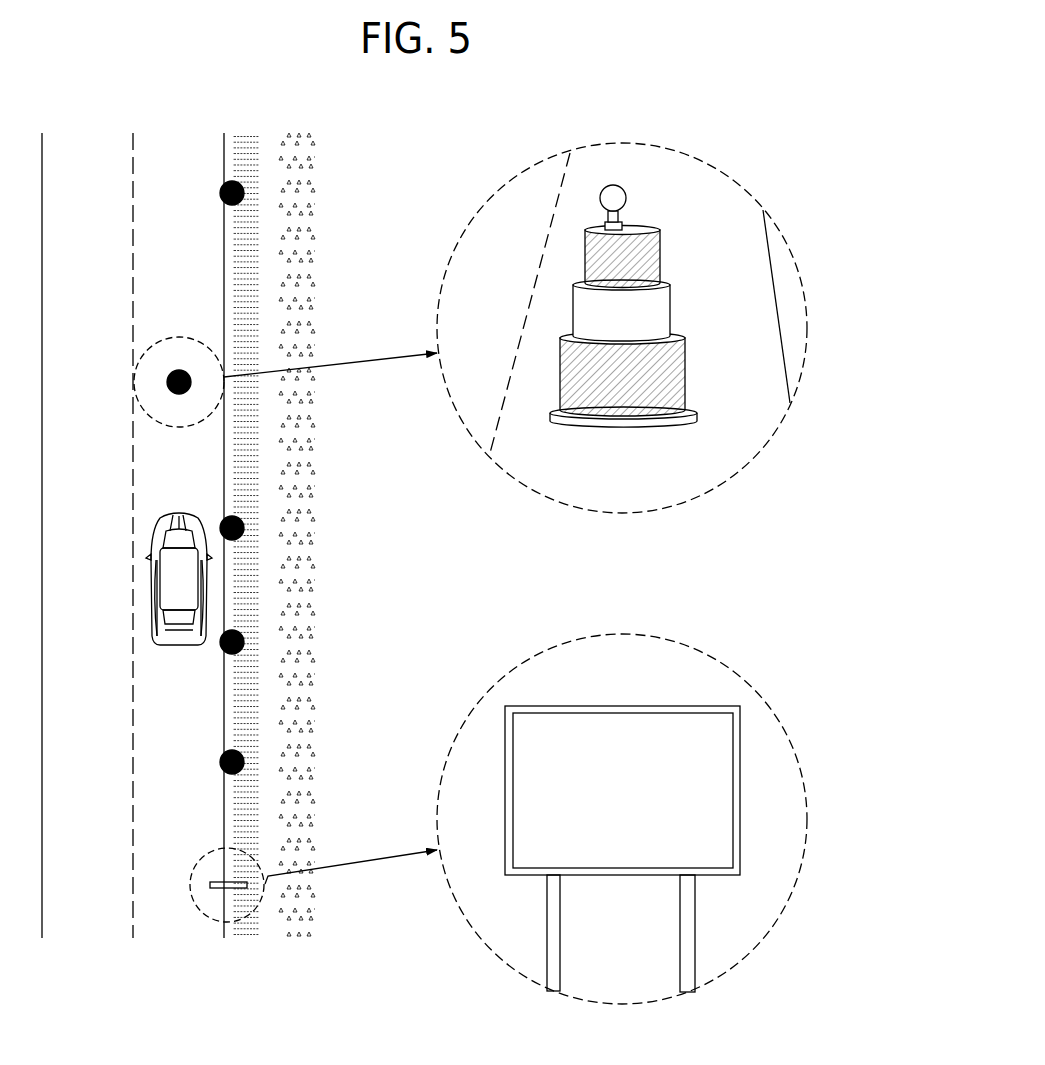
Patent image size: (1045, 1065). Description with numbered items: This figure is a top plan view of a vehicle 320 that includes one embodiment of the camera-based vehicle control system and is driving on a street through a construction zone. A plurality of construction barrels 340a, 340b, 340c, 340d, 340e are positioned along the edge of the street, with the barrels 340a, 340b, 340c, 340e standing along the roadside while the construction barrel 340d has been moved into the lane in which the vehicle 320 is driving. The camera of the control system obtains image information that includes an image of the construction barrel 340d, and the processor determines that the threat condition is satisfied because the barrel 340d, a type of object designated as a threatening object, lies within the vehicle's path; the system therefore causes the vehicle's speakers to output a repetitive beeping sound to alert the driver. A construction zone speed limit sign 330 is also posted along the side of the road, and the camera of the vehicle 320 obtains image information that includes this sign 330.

The vehicle 320 is at (180, 587).
The construction zone speed limit sign 330 is at (218, 889).
The construction barrel 340a is at (244, 757).
The construction barrel 340b is at (244, 637).
The construction barrel 340c is at (244, 523).
The construction barrel 340d is at (188, 392).
The construction barrel 340e is at (244, 188).